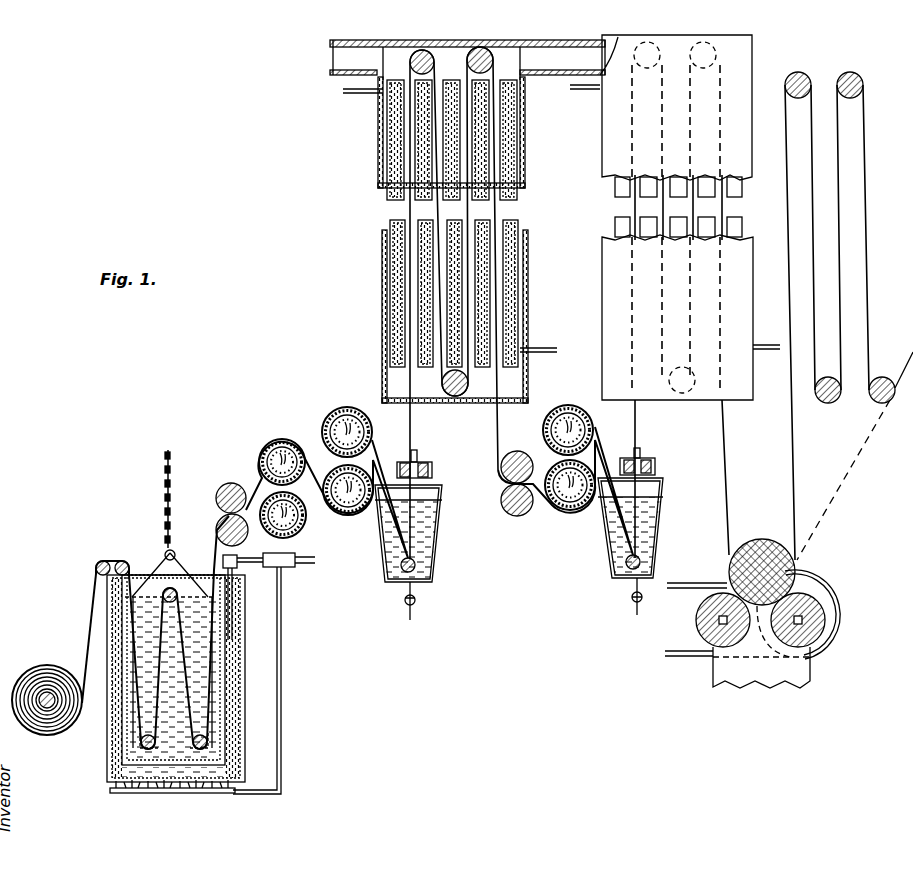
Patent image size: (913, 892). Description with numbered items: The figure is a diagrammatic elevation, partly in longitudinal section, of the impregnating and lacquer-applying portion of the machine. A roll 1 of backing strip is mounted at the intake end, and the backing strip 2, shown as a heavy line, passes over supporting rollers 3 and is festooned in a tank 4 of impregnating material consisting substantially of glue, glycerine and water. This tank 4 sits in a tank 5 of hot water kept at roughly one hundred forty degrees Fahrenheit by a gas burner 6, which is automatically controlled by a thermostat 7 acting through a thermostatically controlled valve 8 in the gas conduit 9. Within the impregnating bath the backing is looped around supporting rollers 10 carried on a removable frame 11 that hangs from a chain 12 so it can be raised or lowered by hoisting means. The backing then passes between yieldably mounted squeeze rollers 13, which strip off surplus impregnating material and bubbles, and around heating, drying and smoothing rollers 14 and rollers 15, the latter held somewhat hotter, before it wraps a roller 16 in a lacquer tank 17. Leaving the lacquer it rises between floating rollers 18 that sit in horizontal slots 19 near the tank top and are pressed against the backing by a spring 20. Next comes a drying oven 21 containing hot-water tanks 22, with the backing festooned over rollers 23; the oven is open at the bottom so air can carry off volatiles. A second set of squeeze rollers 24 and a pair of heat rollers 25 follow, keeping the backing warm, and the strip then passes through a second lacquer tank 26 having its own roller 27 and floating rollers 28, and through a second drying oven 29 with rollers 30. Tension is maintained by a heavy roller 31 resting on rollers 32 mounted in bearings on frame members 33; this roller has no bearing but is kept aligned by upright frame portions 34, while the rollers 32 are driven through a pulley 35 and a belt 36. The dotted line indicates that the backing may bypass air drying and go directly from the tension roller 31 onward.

The roll 1 is at (47, 668).
The backing strip 2 is at (86, 623).
The supporting rollers 3 is at (120, 560).
The tank 4 is at (122, 731).
The tank 5 is at (112, 763).
The gas burner 6 is at (222, 796).
The thermostat 7 is at (236, 608).
The thermostatically controlled valve 8 is at (290, 567).
The gas conduit 9 is at (283, 617).
The supporting rollers 10 is at (176, 592).
The removable frame 11 is at (161, 566).
The chain 12 is at (165, 473).
The pressure or squeeze rollers 13 is at (218, 503).
The heating, drying and smoothing rollers 14 is at (275, 496).
The heating, drying and smoothing rollers 15 is at (337, 452).
The roller 16 is at (432, 566).
The tank 17 is at (442, 548).
The floating rollers 18 is at (404, 462).
The horizontal slots 19 is at (432, 471).
The spring 20 is at (417, 449).
The drying oven 21 is at (375, 291).
The tanks 22 is at (388, 312).
The rollers 23 is at (434, 62).
The squeeze rollers 24 is at (500, 483).
The heat rollers 25 is at (548, 468).
The lacquer tank 26 is at (594, 548).
The roller 27 is at (612, 566).
The floating rollers 28 is at (655, 465).
The drying oven 29 is at (597, 287).
The rollers 30 is at (695, 62).
The roller 31 is at (764, 539).
The rollers 32 is at (697, 620).
The frame members 33 is at (770, 672).
The upright frame portions 34 is at (783, 541).
The pulley 35 is at (832, 615).
The belt 36 is at (840, 74).